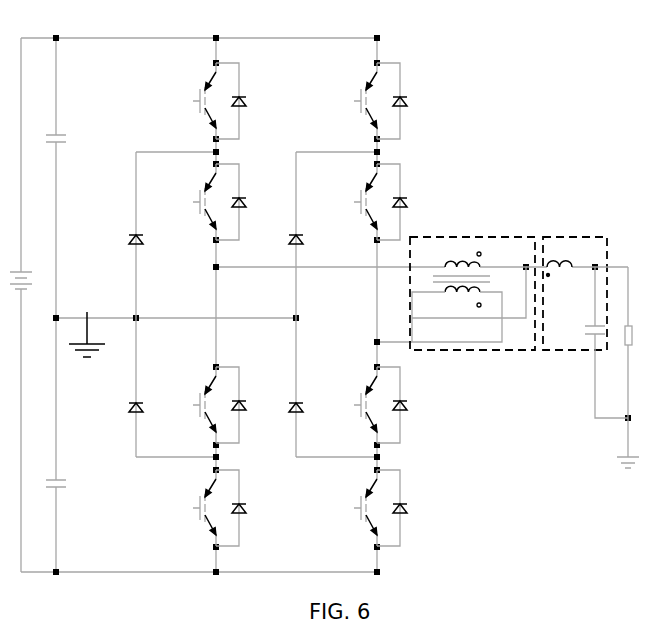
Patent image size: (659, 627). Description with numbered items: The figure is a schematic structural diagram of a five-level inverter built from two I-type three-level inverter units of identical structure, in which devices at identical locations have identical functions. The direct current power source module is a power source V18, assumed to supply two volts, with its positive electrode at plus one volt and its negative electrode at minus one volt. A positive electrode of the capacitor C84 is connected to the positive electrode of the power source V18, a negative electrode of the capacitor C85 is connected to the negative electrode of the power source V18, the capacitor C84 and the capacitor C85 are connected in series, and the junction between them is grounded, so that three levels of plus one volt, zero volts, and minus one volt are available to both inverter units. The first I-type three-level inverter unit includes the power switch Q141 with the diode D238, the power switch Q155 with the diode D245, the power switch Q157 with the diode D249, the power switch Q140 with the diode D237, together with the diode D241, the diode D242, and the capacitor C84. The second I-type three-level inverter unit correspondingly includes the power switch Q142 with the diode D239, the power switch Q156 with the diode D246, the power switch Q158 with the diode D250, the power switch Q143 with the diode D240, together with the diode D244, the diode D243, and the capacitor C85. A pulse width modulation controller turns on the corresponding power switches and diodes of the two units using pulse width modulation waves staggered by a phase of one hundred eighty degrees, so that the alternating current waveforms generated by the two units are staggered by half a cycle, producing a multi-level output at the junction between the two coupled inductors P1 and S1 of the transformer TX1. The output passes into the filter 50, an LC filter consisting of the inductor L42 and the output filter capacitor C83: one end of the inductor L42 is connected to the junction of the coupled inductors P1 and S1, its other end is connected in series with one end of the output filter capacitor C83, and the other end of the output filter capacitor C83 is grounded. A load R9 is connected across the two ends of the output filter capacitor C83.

The filter 50 is at (577, 309).
The transformer TX1 is at (472, 275).
The coupled inductor P1 is at (469, 281).
The coupled inductor S1 is at (457, 314).
The inductor L42 is at (577, 276).
The output filter capacitor C83 is at (606, 342).
The load R9 is at (638, 367).
The capacitor C84 is at (71, 138).
The capacitor C85 is at (71, 486).
The power source V18 is at (32, 270).
The power switch Q141 is at (225, 101).
The power switch Q142 is at (386, 101).
The power switch Q155 is at (225, 202).
The power switch Q156 is at (386, 202).
The power switch Q157 is at (225, 405).
The power switch Q158 is at (386, 405).
The power switch Q140 is at (225, 508).
The power switch Q143 is at (386, 508).
The diode D238 is at (252, 101).
The diode D239 is at (413, 101).
The diode D245 is at (252, 202).
The diode D246 is at (413, 202).
The diode D249 is at (252, 405).
The diode D250 is at (413, 405).
The diode D237 is at (254, 508).
The diode D240 is at (413, 508).
The diode D241 is at (157, 235).
The diode D242 is at (157, 387).
The diode D243 is at (317, 387).
The diode D244 is at (317, 235).